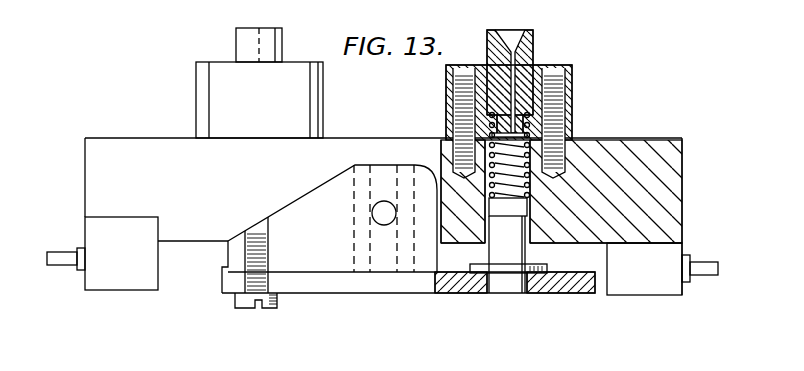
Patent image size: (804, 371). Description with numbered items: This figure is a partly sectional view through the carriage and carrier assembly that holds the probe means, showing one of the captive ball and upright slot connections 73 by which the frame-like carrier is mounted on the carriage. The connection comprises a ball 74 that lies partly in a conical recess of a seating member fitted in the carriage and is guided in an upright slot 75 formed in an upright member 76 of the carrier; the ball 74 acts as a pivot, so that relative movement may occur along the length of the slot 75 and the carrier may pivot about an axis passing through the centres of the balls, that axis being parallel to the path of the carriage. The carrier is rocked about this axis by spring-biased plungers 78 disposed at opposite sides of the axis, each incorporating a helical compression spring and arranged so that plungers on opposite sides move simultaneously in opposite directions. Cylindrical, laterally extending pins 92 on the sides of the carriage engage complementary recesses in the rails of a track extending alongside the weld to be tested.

The captive ball and upright slot connection 73 is at (392, 222).
The ball 74 is at (393, 209).
The upright slot 75 is at (388, 275).
The upright member 76 is at (363, 275).
The plunger 78 is at (527, 50).
The laterally extending pin 92 is at (65, 259).